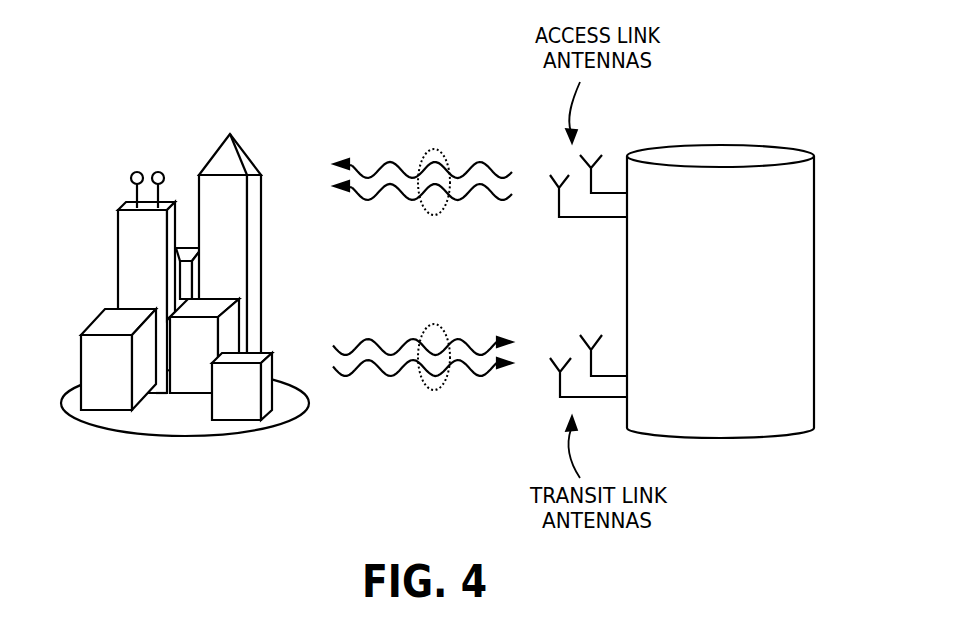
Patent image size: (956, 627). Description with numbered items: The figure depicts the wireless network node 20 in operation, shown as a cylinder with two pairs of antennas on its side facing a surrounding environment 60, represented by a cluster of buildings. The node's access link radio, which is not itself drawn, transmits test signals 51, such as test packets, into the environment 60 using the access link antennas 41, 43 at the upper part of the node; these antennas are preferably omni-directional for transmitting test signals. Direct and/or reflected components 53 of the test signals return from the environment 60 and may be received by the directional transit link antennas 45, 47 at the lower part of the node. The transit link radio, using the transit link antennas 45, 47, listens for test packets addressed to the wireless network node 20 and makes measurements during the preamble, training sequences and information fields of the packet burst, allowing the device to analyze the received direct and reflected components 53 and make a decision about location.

The environment 60 is at (104, 134).
The test signals 51 is at (429, 148).
The direct and/or reflected components 53 is at (430, 323).
The wireless network node 20 is at (733, 320).
The access link antenna 41 is at (610, 192).
The access link antenna 43 is at (600, 218).
The transit link antenna 45 is at (616, 375).
The transit link antenna 47 is at (611, 398).